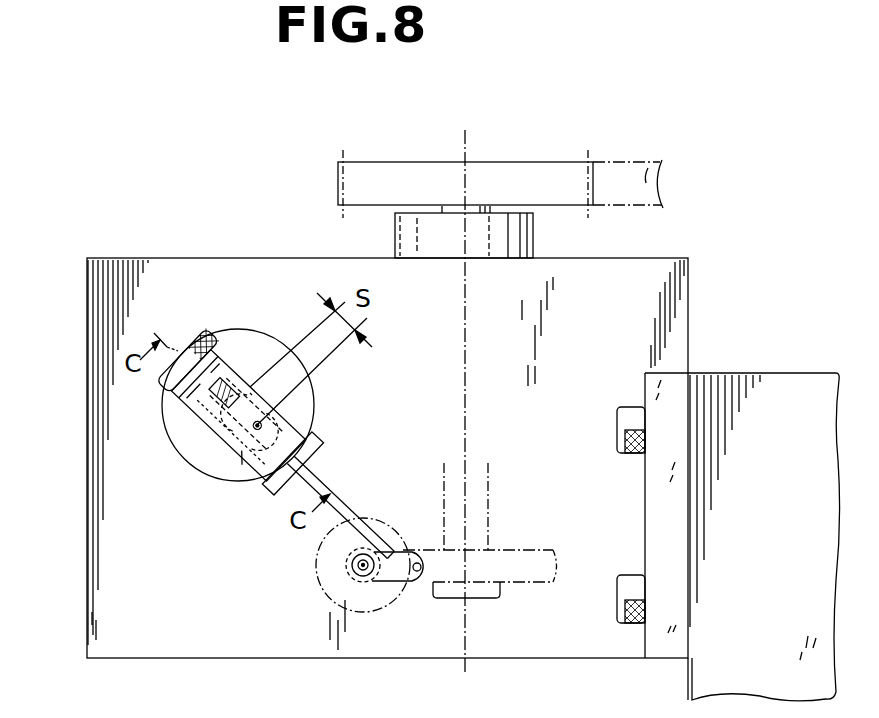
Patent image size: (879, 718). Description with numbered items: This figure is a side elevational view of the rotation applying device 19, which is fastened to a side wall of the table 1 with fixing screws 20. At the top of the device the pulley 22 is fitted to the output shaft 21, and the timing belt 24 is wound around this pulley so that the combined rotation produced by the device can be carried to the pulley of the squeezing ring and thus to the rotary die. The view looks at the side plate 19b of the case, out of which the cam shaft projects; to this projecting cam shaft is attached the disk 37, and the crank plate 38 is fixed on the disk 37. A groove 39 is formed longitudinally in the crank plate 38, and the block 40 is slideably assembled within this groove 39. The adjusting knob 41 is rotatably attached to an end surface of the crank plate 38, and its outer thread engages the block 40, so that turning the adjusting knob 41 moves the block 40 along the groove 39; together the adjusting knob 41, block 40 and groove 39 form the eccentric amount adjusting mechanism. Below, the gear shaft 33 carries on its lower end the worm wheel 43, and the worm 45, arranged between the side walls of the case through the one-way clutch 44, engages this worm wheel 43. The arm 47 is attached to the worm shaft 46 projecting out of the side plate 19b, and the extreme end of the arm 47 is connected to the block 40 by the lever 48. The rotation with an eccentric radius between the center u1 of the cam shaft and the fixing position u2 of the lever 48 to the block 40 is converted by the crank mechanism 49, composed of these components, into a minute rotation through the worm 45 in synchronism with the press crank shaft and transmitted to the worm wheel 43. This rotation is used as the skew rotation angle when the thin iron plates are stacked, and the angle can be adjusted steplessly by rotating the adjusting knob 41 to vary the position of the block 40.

The table 1 is at (815, 375).
The rotation applying device 19 is at (88, 613).
The side plate 19b is at (182, 617).
The fixing screws 20 is at (634, 625).
The output shaft 21 is at (488, 208).
The pulley 22 is at (395, 183).
The timing belt 24 is at (659, 158).
The gear shaft 33 is at (483, 511).
The disk 37 is at (255, 350).
The crank plate 38 is at (200, 423).
The groove 39 is at (245, 466).
The block 40 is at (236, 446).
The adjusting knob 41 is at (185, 342).
The worm wheel 43 is at (537, 574).
The one-way clutch 44 is at (348, 580).
The worm 45 is at (380, 582).
The worm shaft 46 is at (356, 577).
The arm 47 is at (400, 582).
The lever 48 is at (312, 472).
The crank mechanism 49 is at (242, 466).
The center of the cam shaft u1 is at (252, 393).
The fixing position of the lever to the block u2 is at (262, 422).